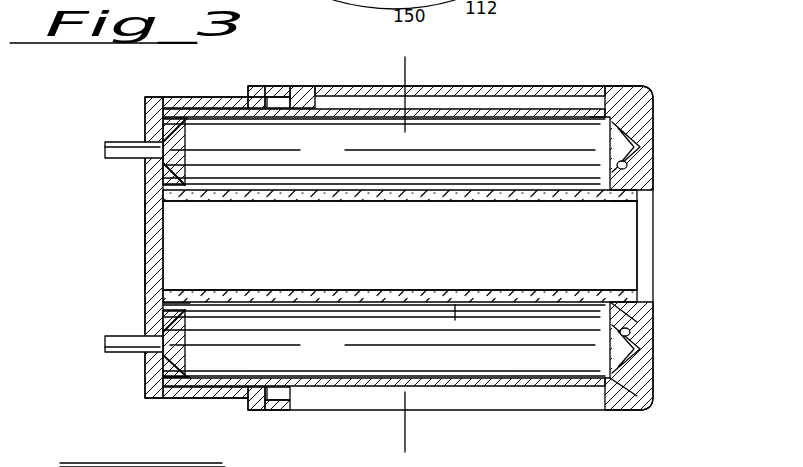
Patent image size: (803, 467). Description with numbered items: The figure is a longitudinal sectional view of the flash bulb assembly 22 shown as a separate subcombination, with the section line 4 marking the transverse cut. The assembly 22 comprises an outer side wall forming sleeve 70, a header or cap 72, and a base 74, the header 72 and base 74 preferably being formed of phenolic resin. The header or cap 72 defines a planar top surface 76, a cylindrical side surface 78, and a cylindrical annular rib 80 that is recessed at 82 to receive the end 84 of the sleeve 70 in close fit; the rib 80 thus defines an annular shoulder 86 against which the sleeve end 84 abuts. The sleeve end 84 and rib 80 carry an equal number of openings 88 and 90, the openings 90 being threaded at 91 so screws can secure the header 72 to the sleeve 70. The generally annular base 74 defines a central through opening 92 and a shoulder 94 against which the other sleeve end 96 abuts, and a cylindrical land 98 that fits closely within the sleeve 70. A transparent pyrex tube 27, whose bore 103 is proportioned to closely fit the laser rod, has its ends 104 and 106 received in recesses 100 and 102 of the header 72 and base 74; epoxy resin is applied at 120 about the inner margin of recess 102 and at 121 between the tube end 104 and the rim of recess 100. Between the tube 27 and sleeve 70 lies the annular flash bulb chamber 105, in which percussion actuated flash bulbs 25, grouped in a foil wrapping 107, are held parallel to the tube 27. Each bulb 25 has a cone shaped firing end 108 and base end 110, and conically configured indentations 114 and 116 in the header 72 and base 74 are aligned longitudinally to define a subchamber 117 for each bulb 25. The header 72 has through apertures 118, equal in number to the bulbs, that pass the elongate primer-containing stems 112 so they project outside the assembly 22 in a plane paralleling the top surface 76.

The flash bulb assembly 22 is at (658, 82).
The flash bulbs 25 is at (513, 115).
The transparent tube 27 is at (455, 292).
The section line 4- 4 is at (446, 68).
The sleeve 70 is at (548, 86).
The header or cap 72 is at (146, 118).
The base 74 is at (650, 136).
The top surface 76 is at (148, 216).
The cylindrical side surface 78 is at (201, 97).
The cylindrical annular rib 80 is at (251, 97).
The recess 82 is at (312, 88).
The sleeve end 84 is at (258, 86).
The annular shoulder 86 is at (252, 410).
The openings or apertures 88 is at (281, 86).
The openings or apertures 90 is at (282, 108).
The threading 91 is at (270, 108).
The central through opening 92 is at (645, 250).
The shoulder 94 is at (640, 86).
The sleeve end 96 is at (607, 109).
The cylindrical land 98 is at (623, 412).
The recess 100 is at (163, 258).
The recess 102 is at (632, 292).
The bore 103 is at (422, 302).
The tube end 104 is at (178, 202).
The annular flash bulb chamber 105 is at (535, 386).
The tube end 106 is at (625, 196).
The foil wrapping 107 is at (595, 112).
The firing ends 108 is at (178, 112).
The base ends 110 is at (648, 134).
The stems 112 is at (125, 150).
The conically configured indentations 114 is at (168, 178).
The conically configured indentations 116 is at (628, 165).
The subchamber 117 is at (380, 128).
The through apertures 118 is at (166, 158).
The epoxy resin 120 is at (636, 318).
The epoxy resin 121 is at (180, 300).